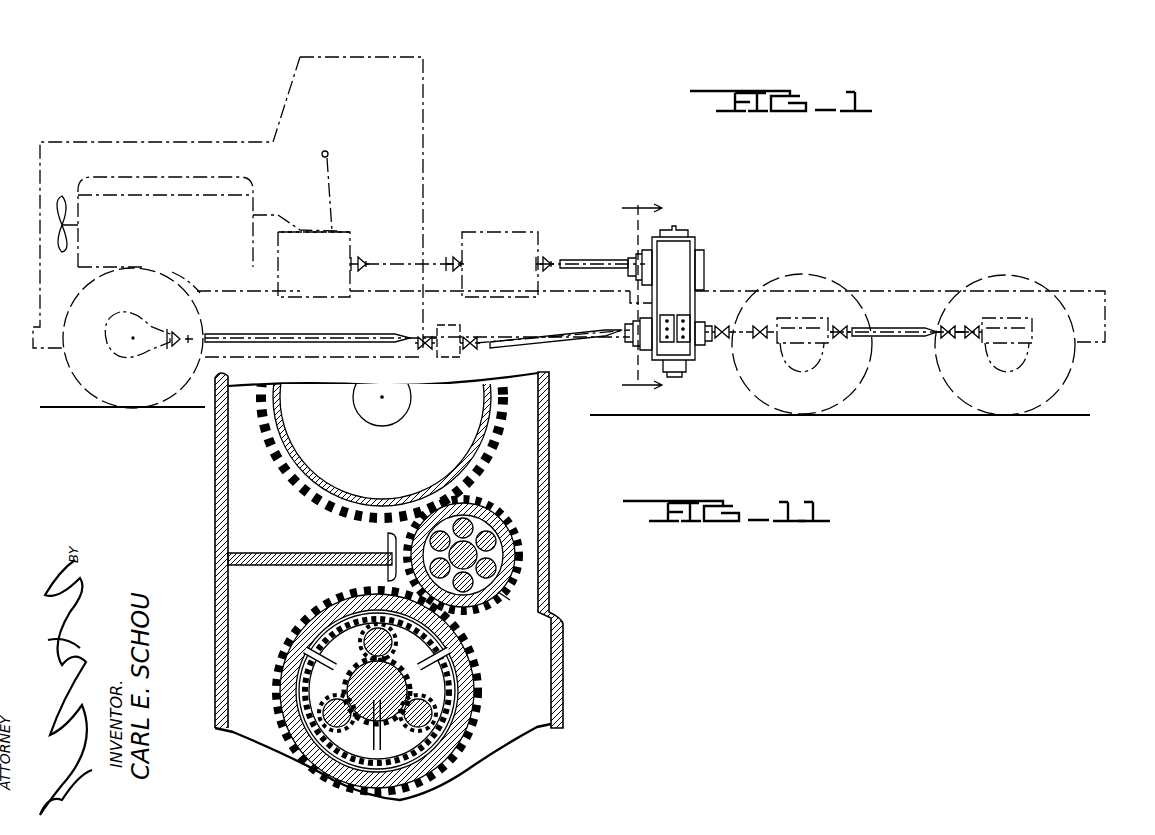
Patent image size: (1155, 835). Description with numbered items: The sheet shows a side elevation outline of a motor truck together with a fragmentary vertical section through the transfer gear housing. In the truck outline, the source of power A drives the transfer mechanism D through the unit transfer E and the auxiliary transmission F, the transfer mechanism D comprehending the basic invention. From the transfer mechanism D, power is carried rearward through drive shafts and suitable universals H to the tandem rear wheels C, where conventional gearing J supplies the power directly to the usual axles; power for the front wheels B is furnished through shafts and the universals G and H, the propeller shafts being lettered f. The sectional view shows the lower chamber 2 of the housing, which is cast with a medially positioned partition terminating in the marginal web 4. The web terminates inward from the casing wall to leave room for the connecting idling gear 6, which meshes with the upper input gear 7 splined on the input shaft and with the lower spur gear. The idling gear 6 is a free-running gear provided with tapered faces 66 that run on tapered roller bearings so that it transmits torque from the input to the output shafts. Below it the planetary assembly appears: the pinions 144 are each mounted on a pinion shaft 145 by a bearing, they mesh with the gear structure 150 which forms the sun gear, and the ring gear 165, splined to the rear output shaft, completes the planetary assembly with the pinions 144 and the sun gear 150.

In FIG. 1, the source of power A is at (258, 209).
In FIG. 1, the front wheels B is at (192, 328).
In FIG. 1, the rear wheels C is at (757, 342).
In FIG. 1, the transfer mechanism D is at (683, 296).
In FIG. 1, the unit transfer E is at (337, 244).
In FIG. 1, the auxiliary transmission F is at (510, 245).
In FIG. 1, the universal G is at (448, 336).
In FIG. 1, the universals H is at (718, 340).
In FIG. 1, the conventional gearing J is at (803, 330).
In FIG. 1, the propeller shafts f is at (335, 347).
In FIG. 1, the lower chamber 2 is at (623, 301).
In FIG. 11, the marginal web 4 is at (388, 546).
In FIG. 11, the idling gear 6 is at (483, 503).
In FIG. 11, the upper input gear 7 is at (475, 414).
In FIG. 11, the tapered faces 66 is at (514, 602).
In FIG. 11, the pinions 144 is at (460, 704).
In FIG. 11, the pinion shaft 145 is at (372, 623).
In FIG. 11, the gear structure 150 is at (440, 658).
In FIG. 11, the ring gear 165 is at (470, 669).